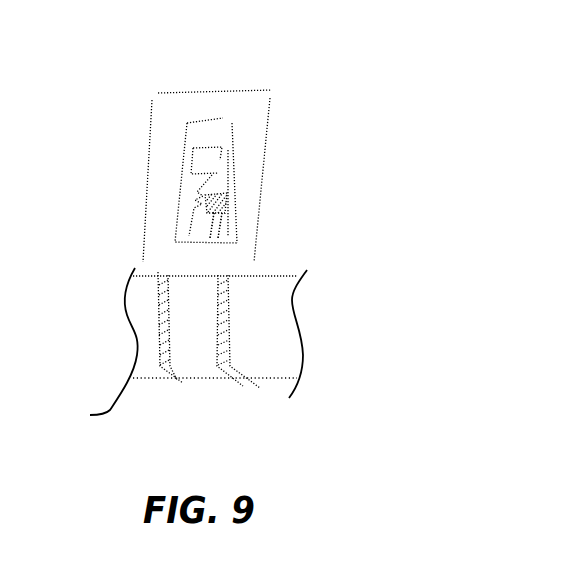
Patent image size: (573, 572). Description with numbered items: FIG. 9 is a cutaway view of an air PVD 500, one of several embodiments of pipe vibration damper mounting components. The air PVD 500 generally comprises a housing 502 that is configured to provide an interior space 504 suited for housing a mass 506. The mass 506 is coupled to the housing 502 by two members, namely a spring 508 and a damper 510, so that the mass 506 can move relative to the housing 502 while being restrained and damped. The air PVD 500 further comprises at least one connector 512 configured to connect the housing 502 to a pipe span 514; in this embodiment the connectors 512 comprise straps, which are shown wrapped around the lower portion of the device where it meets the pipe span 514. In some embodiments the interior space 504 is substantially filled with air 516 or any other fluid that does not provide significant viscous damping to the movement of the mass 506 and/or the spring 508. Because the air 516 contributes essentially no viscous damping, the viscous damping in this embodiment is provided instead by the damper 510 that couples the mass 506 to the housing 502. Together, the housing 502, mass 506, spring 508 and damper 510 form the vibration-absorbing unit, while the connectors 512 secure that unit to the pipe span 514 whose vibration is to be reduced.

The air PVD 500 is at (405, 95).
The housing 502 is at (253, 108).
The interior space 504 is at (227, 232).
The mass 506 is at (221, 149).
The spring 508 is at (230, 199).
The damper 510 is at (228, 197).
The connector 512 is at (157, 367).
The pipe span 514 is at (278, 352).
The air 516 is at (227, 232).